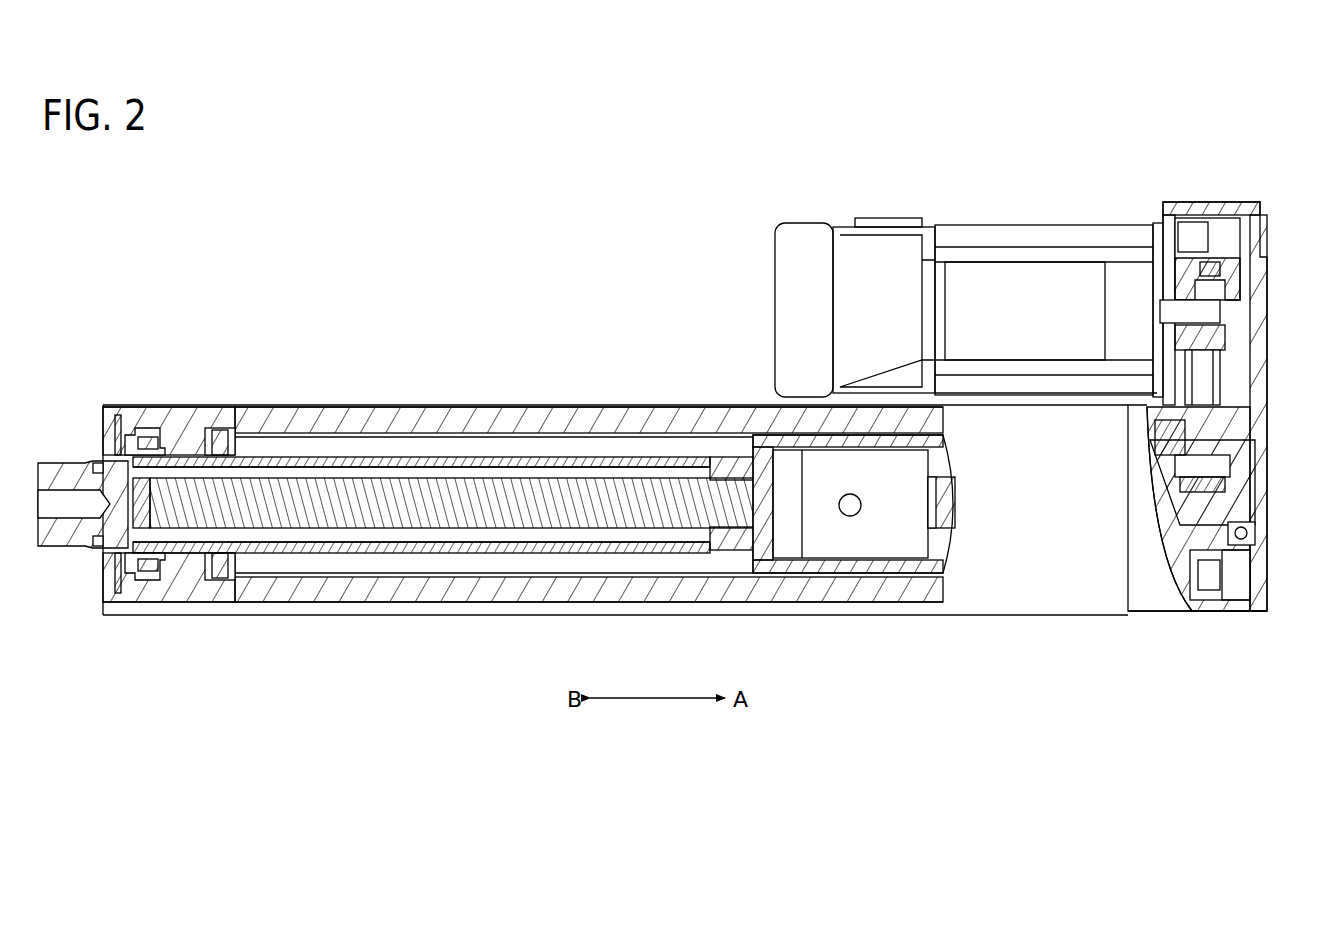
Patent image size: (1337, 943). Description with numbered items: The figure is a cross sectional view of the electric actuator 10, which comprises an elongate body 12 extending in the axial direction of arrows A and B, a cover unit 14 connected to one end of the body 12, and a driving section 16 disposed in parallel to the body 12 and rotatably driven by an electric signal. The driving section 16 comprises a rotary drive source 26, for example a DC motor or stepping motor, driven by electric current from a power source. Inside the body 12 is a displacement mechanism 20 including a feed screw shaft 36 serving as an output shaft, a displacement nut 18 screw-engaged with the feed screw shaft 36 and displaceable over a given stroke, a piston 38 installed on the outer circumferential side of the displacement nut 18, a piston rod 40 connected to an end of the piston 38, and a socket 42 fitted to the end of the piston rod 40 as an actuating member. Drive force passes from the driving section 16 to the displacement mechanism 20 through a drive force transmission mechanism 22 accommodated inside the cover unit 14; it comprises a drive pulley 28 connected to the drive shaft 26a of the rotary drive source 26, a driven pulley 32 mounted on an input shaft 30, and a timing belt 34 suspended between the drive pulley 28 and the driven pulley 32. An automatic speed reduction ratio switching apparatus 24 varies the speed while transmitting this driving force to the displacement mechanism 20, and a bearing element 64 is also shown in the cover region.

The electric actuator 10 is at (109, 203).
The body 12 is at (320, 403).
The cover unit 14 is at (1226, 196).
The driving section 16 is at (965, 218).
The displacement nut 18 is at (847, 540).
The displacement mechanism 20 is at (355, 538).
The drive force transmission mechanism 22 is at (1240, 247).
The automatic speed reduction ratio switching apparatus 24 is at (1108, 617).
The rotary drive source 26 is at (1016, 270).
The drive shaft 26a is at (1170, 312).
The drive pulley 28 is at (1230, 338).
The input shaft 30 is at (1245, 505).
The driven pulley 32 is at (1250, 553).
The timing belt 34 is at (1210, 378).
The feed screw shaft 36 is at (540, 498).
The piston 38 is at (862, 406).
The piston rod 40 is at (375, 460).
The socket 42 is at (58, 470).
The bearing 64 is at (1257, 533).